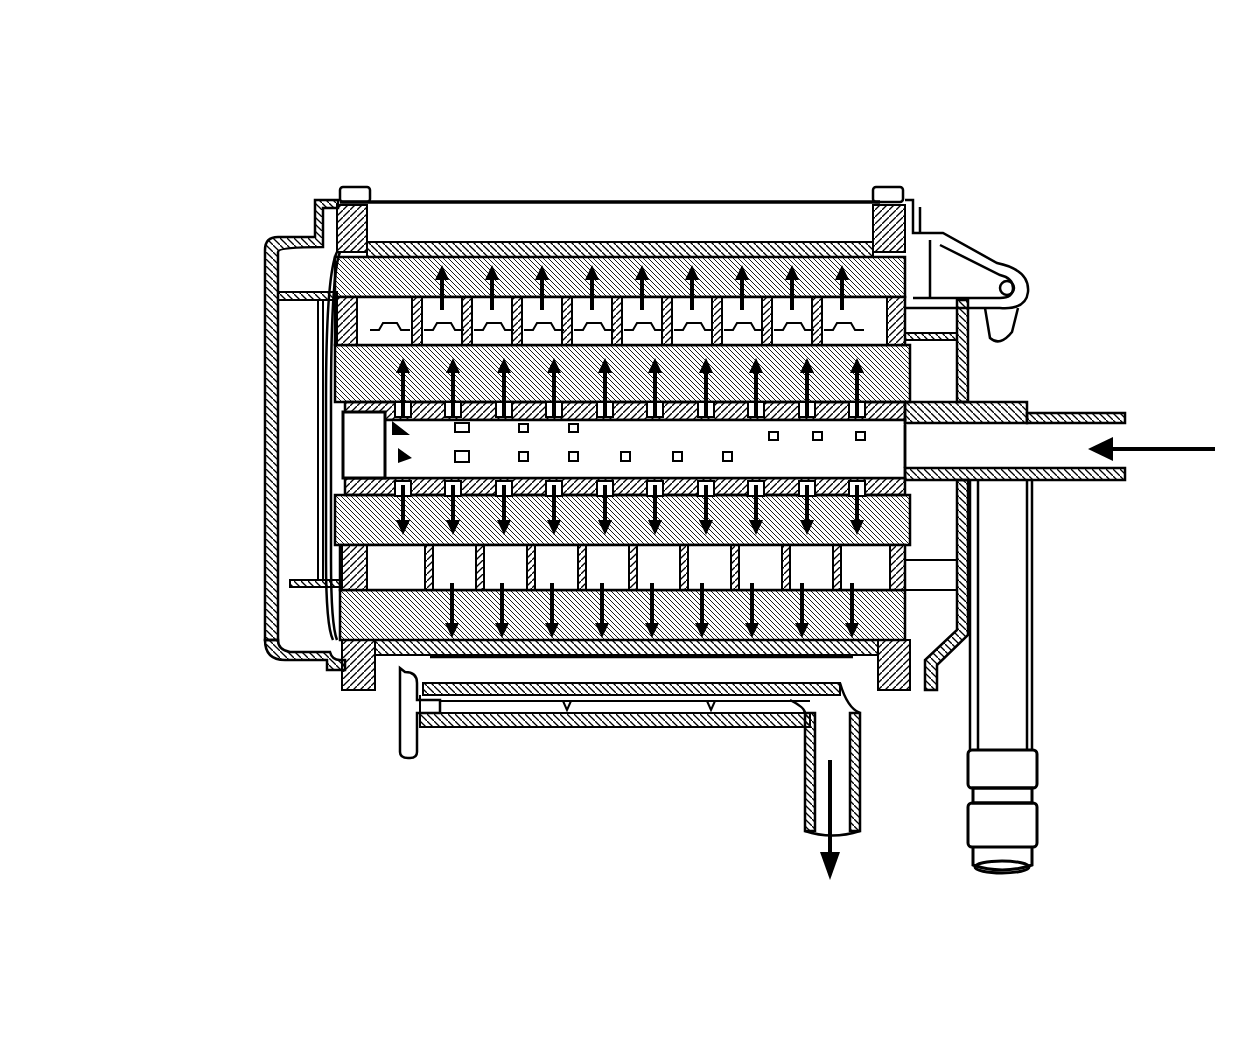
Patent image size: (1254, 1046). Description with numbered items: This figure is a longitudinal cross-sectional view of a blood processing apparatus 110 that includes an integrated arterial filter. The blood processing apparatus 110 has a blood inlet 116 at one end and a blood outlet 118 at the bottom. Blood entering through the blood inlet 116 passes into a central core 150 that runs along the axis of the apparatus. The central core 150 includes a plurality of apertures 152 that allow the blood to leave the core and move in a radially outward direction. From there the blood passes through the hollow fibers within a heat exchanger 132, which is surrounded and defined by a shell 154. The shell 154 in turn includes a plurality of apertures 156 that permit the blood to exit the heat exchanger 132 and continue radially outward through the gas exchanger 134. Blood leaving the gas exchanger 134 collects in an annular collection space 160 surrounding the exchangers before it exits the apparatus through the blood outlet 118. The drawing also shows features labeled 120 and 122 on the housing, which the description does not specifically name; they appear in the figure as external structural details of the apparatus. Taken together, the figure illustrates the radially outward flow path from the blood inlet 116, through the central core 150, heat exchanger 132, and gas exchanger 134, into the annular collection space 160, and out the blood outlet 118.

The blood processing apparatus 110 is at (192, 178).
The blood inlet 116 is at (1062, 430).
The blood outlet 118 is at (828, 772).
The retention hook 120 is at (388, 727).
The mounting hook 122 is at (985, 285).
The heat exchanger 132 is at (305, 401).
The gas exchanger 134 is at (318, 288).
The central core 150 is at (537, 438).
The apertures 152 is at (870, 432).
The shell 154 is at (362, 325).
The apertures 156 is at (452, 314).
The annular collection space 160 is at (640, 224).